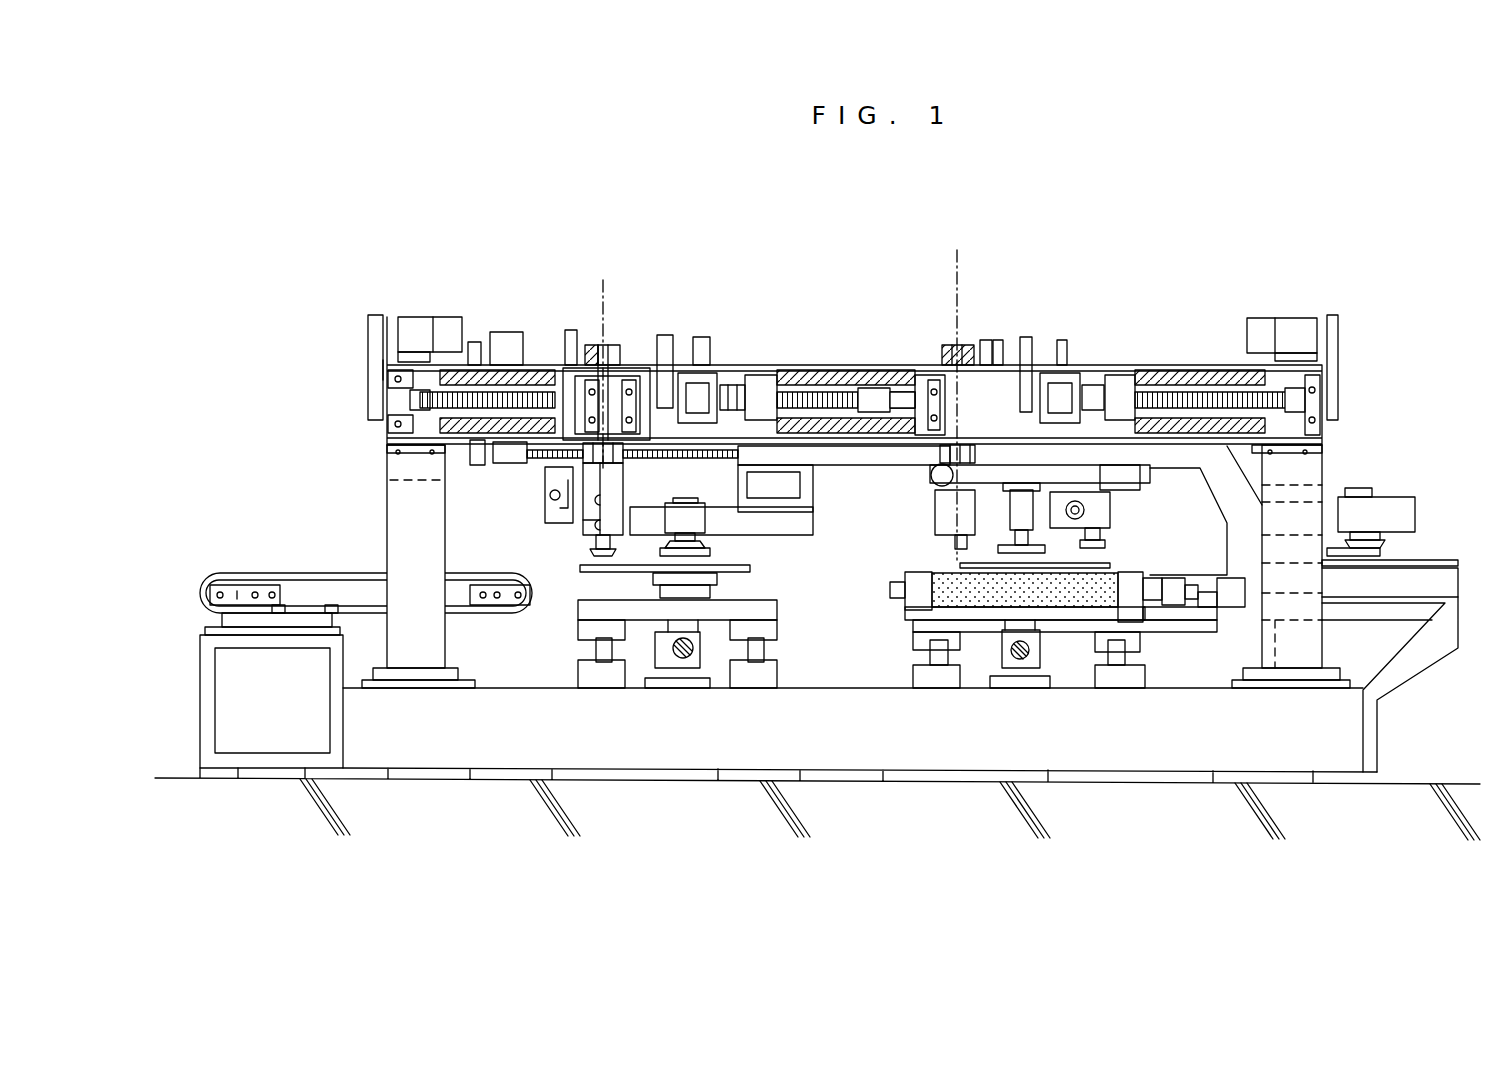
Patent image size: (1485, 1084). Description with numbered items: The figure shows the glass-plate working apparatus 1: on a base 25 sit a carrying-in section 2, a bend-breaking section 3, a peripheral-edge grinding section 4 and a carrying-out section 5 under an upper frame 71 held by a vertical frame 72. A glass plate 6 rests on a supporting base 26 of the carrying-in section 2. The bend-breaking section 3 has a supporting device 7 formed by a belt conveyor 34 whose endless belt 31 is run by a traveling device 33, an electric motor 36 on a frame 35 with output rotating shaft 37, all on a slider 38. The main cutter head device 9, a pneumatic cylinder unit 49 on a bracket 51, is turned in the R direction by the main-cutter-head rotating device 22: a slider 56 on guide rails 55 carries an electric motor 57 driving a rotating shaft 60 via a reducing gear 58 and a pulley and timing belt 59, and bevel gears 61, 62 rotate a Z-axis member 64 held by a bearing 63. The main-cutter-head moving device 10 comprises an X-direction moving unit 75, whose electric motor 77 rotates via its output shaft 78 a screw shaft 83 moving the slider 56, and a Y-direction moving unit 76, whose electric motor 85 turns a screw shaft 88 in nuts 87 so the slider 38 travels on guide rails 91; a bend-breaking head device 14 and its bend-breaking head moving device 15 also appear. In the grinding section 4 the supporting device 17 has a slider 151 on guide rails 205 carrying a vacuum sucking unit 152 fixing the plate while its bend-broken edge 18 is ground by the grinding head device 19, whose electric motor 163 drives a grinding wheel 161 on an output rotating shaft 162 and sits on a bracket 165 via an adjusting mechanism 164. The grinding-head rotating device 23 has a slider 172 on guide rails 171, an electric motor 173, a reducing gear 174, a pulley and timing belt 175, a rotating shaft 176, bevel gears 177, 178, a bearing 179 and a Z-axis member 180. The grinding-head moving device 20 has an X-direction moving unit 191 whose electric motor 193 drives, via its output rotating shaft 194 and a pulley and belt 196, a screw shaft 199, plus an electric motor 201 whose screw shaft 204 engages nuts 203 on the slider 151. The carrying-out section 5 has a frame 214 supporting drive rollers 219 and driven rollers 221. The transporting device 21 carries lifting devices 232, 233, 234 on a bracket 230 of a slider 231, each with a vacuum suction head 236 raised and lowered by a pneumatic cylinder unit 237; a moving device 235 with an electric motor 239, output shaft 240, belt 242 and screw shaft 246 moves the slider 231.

The glass-plate working apparatus 1 is at (1165, 315).
The glass plate carrying-in section 2 is at (1392, 672).
The glass plate bend-breaking section 3 is at (892, 618).
The glass plate peripheral-edge grinding section 4 is at (565, 630).
The glass plate carrying-out section 5 is at (298, 540).
The glass plate 6 is at (720, 572).
The supporting device 7 is at (880, 580).
The main cutter head device 9 is at (926, 527).
The main-cutter-head moving device 10 is at (1322, 311).
The bend-breaking head device 14 is at (1161, 530).
The bend-breaking head moving device 15 is at (1155, 495).
The supporting device 17 is at (790, 592).
The bend-broken edge 18 is at (720, 580).
The grinding head device 19 is at (545, 530).
The grinding-head moving device 20 is at (437, 290).
The transporting device 21 is at (1406, 503).
The main-cutter-head rotating device 22 is at (1095, 360).
The grinding-head rotating device 23 is at (755, 370).
The base 25 is at (1157, 784).
The supporting base 26 is at (1440, 628).
The endless belt 31 is at (1132, 618).
The traveling device 33 is at (1215, 530).
The belt conveyor 34 is at (1185, 655).
The frame 35 is at (1210, 615).
The electric motor 36 is at (1232, 580).
The output rotating shaft 37 is at (1190, 580).
The slider 38 is at (1068, 630).
The pneumatic cylinder unit 49 is at (935, 505).
The bracket 51 is at (1010, 505).
The guide rails 55 is at (1215, 370).
The slider 56 is at (1075, 375).
The electric motor 57 is at (1125, 378).
The reducing gear 58 is at (1065, 345).
The pulley and timing belt 59 is at (1030, 340).
The rotating shaft 60 is at (1000, 340).
The bevel gear 61 is at (948, 345).
The bevel gear 62 is at (978, 339).
The bearing 63 is at (920, 395).
The Z-axis member 64 is at (925, 372).
The upper frame 71 is at (1322, 441).
The vertical frame 72 is at (388, 495).
The X-direction moving unit 75 is at (1350, 316).
The Y-direction moving unit 76 is at (1000, 715).
The electric motor 77 is at (1285, 318).
The output shaft 78 is at (1338, 325).
The screw shaft 83 is at (1215, 420).
The electric motor 85 is at (1048, 688).
The nuts 87 is at (1000, 650).
The screw shaft 88 is at (1010, 690).
The guide rails 91 is at (925, 650).
The slider 151 is at (778, 617).
The vacuum sucking unit 152 is at (655, 583).
The grinding wheel 161 is at (585, 572).
The output rotating shaft 162 is at (570, 543).
The electric motor 163 is at (545, 515).
The adjusting mechanism 164 is at (583, 500).
The bracket 165 is at (583, 480).
The guide rails 171 is at (820, 375).
The slider 172 is at (718, 380).
The electric motor 173 is at (740, 385).
The reducing gear 174 is at (712, 350).
The pulley and timing belt 175 is at (668, 340).
The rotating shaft 176 is at (648, 370).
The bevel gear 177 is at (590, 345).
The bevel gear 178 is at (610, 345).
The bearing 179 is at (568, 345).
The Z-axis member 180 is at (625, 370).
The X-direction moving unit 191 is at (389, 291).
The electric motor 193 is at (410, 317).
The output rotating shaft 194 is at (368, 320).
The pulley and belt 196 is at (370, 372).
The screw shaft 199 is at (440, 405).
The electric motor 201 is at (695, 690).
The nuts 203 is at (700, 650).
The screw shaft 204 is at (675, 668).
The guide rails 205 is at (766, 650).
The frame 214 is at (197, 700).
The drive rollers 219 is at (218, 573).
The driven rollers 221 is at (512, 608).
The bracket 230 is at (1110, 508).
The slider 231 is at (835, 467).
The lifting device 232 is at (1403, 523).
The lifting device 233 is at (956, 550).
The lifting device 234 is at (610, 550).
The moving device 235 is at (505, 300).
The vacuum suction head 236 is at (710, 553).
The pneumatic cylinder unit 237 is at (675, 512).
The electric motor 239 is at (505, 330).
The output shaft 240 is at (475, 340).
The belt 242 is at (510, 462).
The screw shaft 246 is at (710, 507).